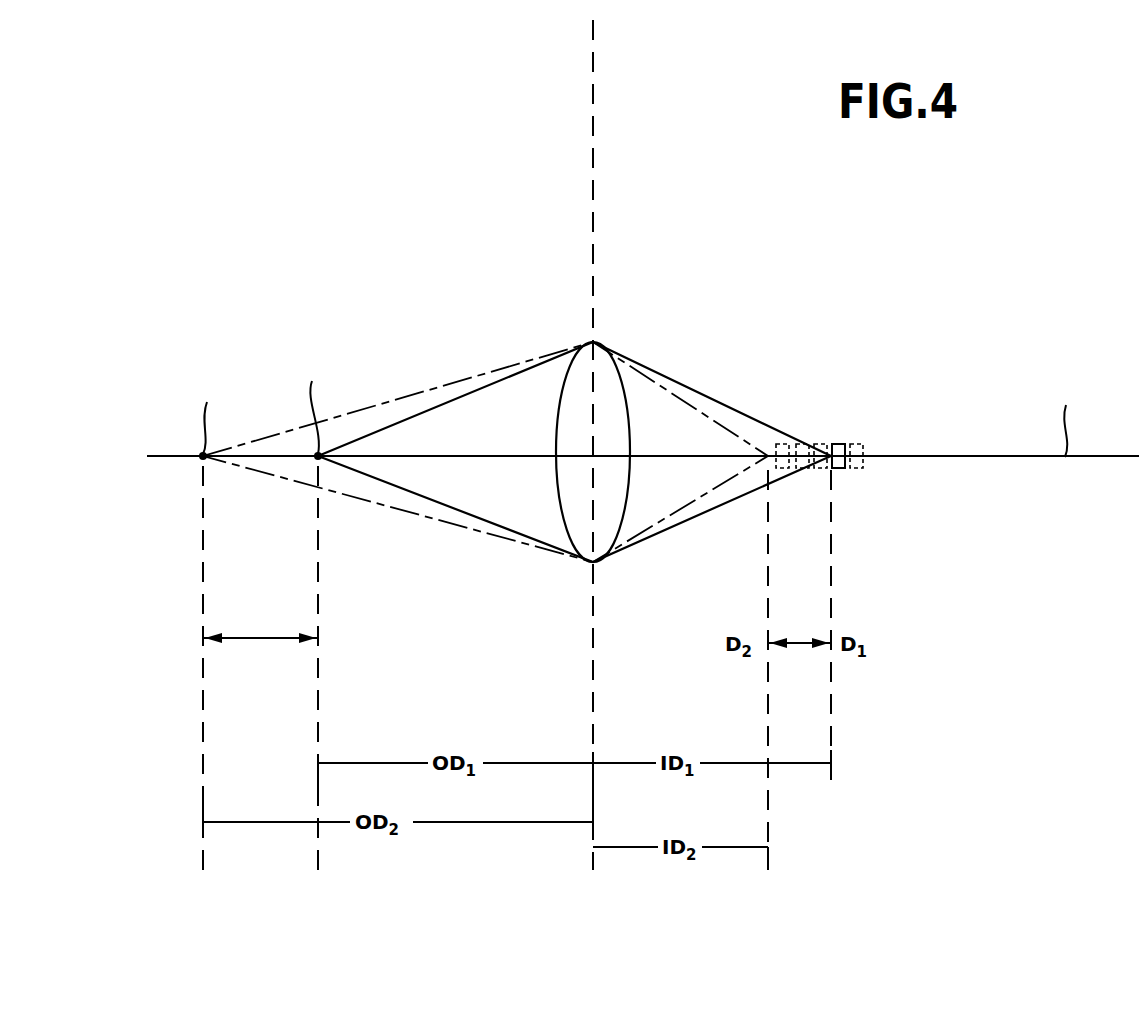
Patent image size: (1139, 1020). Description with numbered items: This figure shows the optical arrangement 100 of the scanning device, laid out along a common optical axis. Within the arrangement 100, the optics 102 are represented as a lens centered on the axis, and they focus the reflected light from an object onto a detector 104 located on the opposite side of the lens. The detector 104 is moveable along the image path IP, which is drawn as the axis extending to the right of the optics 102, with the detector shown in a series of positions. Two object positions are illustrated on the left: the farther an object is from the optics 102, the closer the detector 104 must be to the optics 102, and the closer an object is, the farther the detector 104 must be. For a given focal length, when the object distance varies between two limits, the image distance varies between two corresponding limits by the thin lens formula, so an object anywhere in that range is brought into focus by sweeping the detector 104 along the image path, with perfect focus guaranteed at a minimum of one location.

The optical arrangement 100 is at (396, 318).
The optics 102 is at (625, 375).
The detector 104 is at (841, 445).